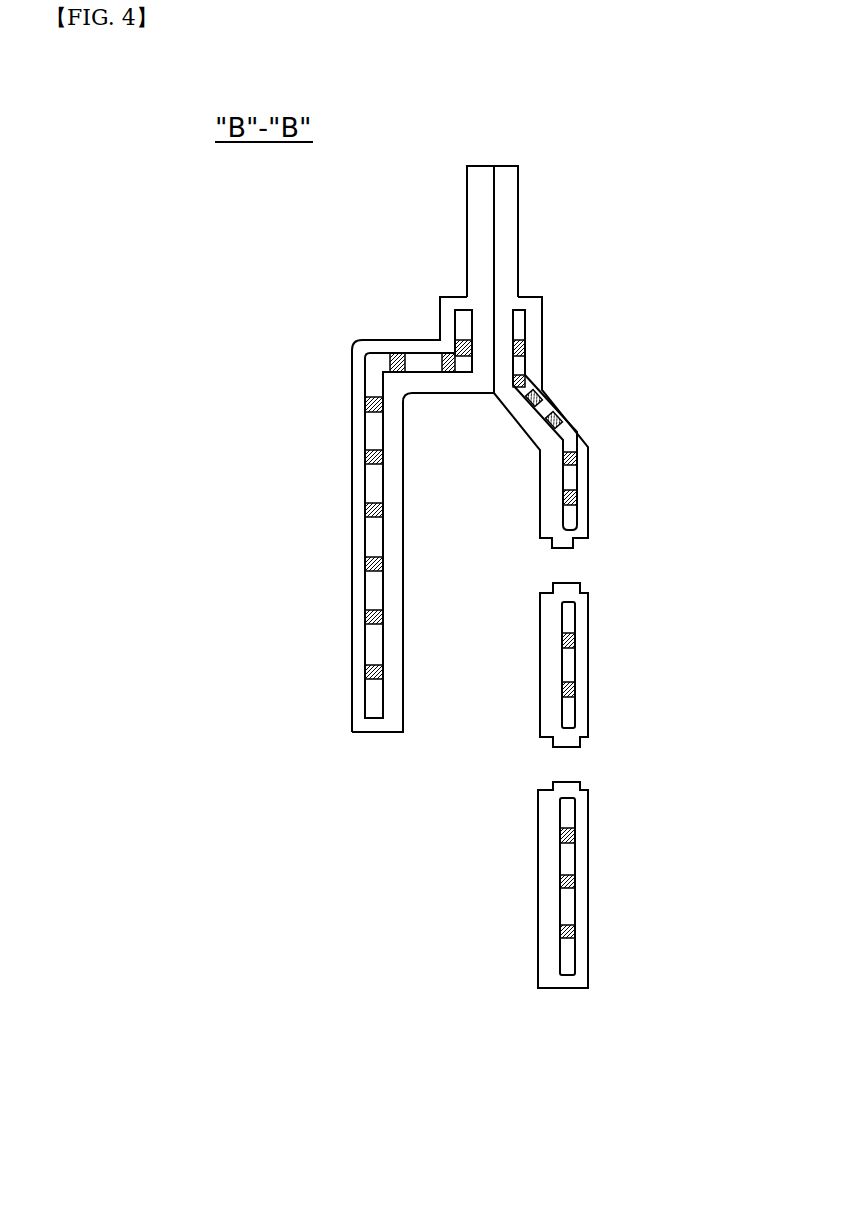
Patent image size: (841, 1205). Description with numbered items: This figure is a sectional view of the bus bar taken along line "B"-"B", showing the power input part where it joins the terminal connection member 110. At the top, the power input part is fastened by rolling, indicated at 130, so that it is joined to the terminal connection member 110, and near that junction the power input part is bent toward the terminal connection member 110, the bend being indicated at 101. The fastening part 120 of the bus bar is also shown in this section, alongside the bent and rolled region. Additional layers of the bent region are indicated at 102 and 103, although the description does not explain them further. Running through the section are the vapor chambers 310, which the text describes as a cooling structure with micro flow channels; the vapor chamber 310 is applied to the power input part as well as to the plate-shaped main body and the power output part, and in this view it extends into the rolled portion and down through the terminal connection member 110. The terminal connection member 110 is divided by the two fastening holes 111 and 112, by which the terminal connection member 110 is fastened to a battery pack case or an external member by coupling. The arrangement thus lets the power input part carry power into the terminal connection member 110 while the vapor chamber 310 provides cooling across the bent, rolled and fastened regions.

The fastening by rolling 130 is at (455, 222).
The fastening part 120 is at (472, 540).
The third layer 103 is at (434, 330).
The bent portion 101 is at (399, 330).
The second layer / outer wall 102 is at (357, 330).
The vapor chamber 310 is at (575, 478).
The fastening hole 111 is at (580, 566).
The fastening hole 112 is at (580, 763).
The terminal connection member 110 is at (561, 993).